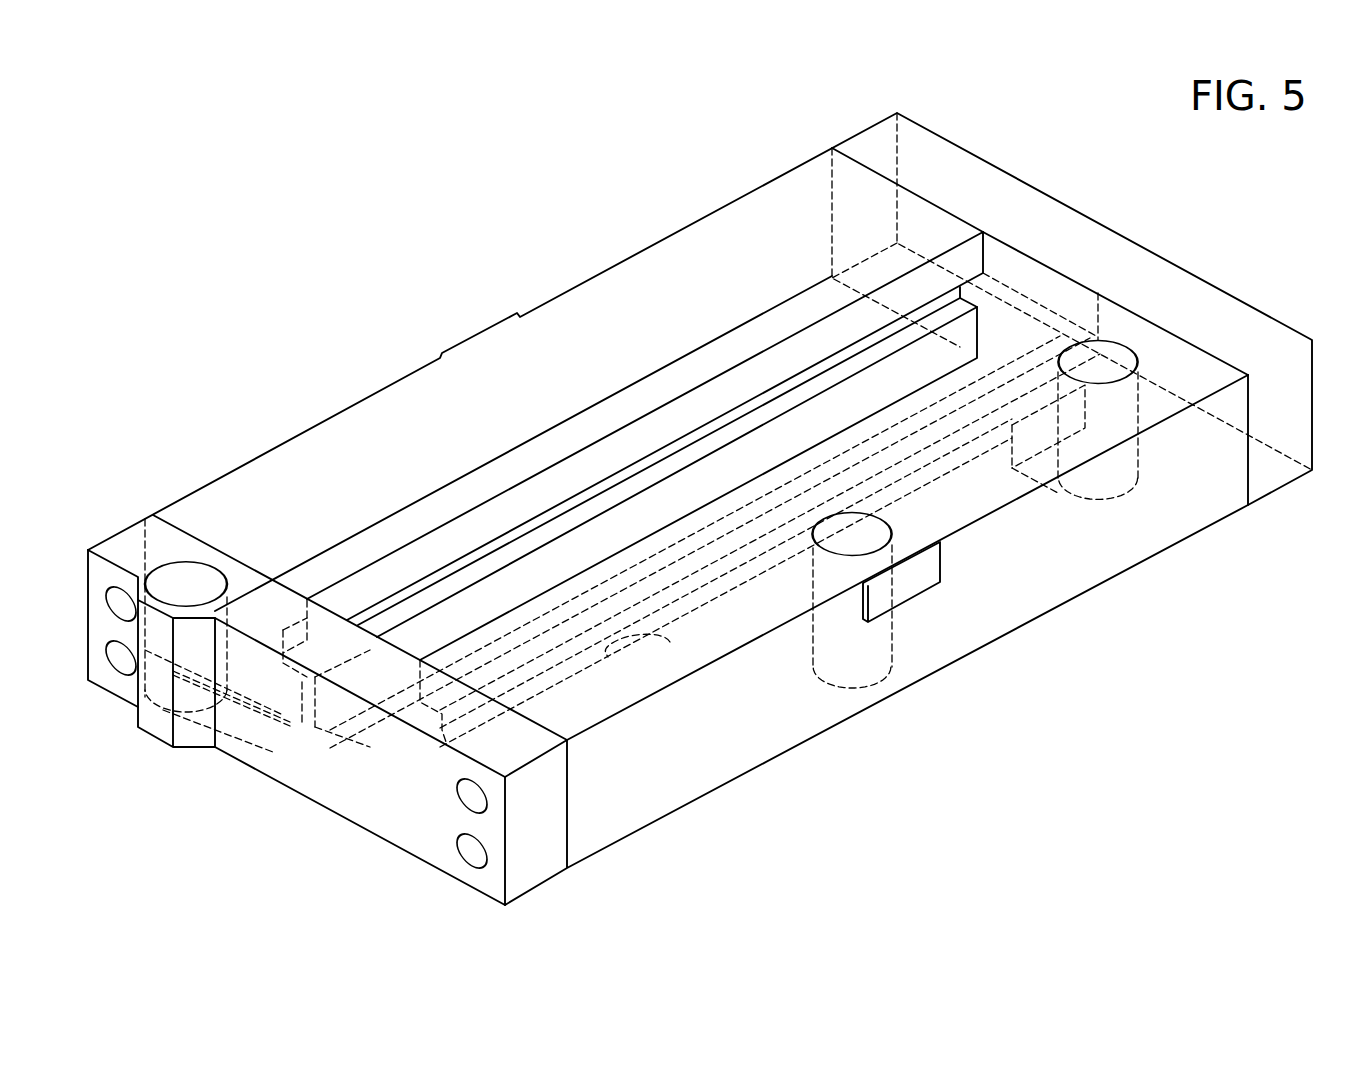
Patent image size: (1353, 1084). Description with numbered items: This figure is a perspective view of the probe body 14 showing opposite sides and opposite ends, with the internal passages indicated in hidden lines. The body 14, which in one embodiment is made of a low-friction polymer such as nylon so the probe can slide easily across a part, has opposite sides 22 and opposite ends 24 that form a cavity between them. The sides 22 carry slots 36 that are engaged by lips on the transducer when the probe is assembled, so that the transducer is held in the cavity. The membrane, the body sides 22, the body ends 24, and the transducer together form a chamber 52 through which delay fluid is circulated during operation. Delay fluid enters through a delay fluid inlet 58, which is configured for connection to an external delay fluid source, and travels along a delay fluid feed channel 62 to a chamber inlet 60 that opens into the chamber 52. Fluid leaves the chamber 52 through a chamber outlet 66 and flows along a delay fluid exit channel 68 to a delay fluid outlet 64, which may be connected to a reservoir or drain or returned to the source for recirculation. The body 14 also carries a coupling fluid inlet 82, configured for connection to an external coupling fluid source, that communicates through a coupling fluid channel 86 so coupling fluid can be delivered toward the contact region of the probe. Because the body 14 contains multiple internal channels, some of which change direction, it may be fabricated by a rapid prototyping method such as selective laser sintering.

The body 14 is at (1047, 128).
The sides 22 is at (218, 479).
The ends 24 is at (146, 538).
The slots 36 is at (737, 432).
The chamber 52 is at (612, 528).
The delay fluid inlet 58 is at (165, 566).
The chamber inlet 60 is at (390, 748).
The delay fluid feed channel 62 is at (273, 752).
The delay fluid outlet 64 is at (1130, 348).
The chamber outlet 66 is at (1012, 462).
The delay fluid exit channel 68 is at (1062, 482).
The coupling fluid inlet 82 is at (888, 516).
The coupling fluid channel 86 is at (815, 653).